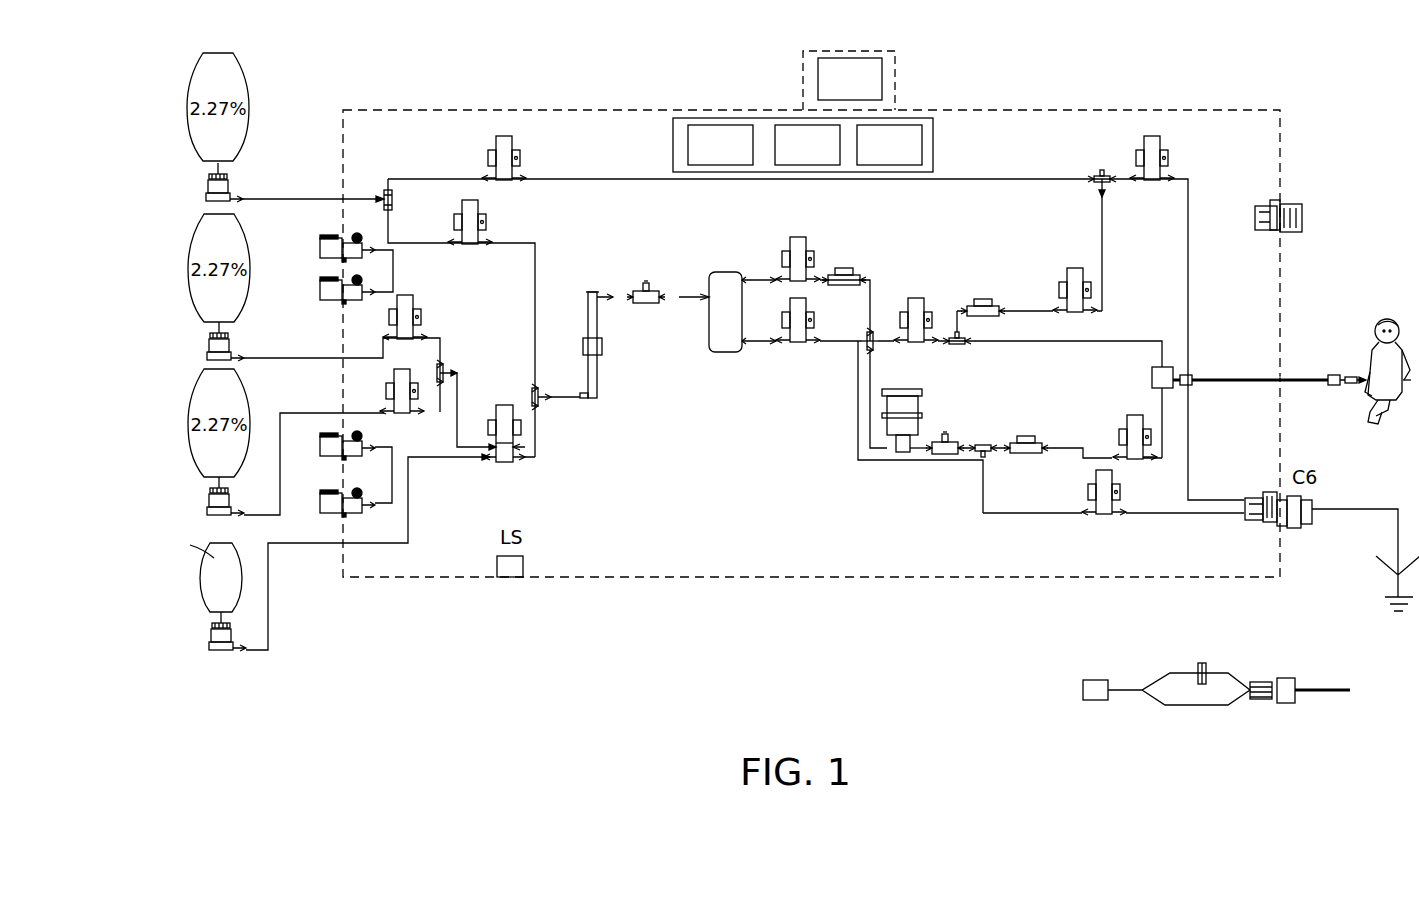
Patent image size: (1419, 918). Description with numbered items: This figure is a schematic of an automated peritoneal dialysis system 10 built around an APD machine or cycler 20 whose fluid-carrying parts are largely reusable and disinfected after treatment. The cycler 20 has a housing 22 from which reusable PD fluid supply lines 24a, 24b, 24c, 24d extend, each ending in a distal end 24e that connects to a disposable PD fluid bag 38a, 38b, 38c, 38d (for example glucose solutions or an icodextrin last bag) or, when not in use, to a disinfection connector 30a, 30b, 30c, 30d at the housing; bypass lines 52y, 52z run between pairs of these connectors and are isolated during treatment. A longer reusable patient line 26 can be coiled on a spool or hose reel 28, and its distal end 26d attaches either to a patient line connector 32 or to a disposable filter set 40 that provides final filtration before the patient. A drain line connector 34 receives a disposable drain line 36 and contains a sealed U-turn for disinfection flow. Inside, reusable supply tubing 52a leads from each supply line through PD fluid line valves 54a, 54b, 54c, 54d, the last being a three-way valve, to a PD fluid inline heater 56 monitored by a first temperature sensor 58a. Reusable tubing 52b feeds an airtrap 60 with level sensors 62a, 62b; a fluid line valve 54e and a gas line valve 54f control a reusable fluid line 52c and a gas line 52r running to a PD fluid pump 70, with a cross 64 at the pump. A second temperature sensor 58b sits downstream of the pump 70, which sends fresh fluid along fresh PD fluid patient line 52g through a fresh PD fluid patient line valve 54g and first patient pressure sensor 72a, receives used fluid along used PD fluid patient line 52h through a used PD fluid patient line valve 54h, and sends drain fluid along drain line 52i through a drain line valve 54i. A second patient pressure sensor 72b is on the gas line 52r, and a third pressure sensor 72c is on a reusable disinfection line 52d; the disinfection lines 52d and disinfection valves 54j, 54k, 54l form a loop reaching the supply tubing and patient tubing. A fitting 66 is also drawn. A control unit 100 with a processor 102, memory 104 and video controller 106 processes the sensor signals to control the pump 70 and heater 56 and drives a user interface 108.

The automated peritoneal dialysis system 10 is at (638, 92).
The APD machine or cycler 20 is at (1282, 110).
The housing 22 is at (1050, 108).
The reusable PD fluid supply line 24a is at (300, 198).
The reusable PD fluid supply line 24b is at (302, 357).
The reusable PD fluid supply line 24c is at (326, 412).
The reusable PD fluid supply line 24d is at (300, 545).
The distal end 24e is at (207, 197).
The reusable patient line 26 is at (1310, 378).
The distal end 26d is at (1334, 375).
The spool or hose reel 28 is at (1152, 377).
The disinfection connector 30a is at (318, 250).
The disinfection connector 30b is at (318, 292).
The disinfection connector 30c is at (316, 458).
The disinfection connector 30d is at (330, 520).
The patient line connector 32 is at (1302, 212).
The drain line connector 34 is at (1254, 496).
The disposable drain line 36 is at (1392, 508).
The PD fluid container or bag 38a is at (189, 133).
The PD fluid container or bag 38b is at (190, 289).
The PD fluid container or bag 38c is at (191, 450).
The PD fluid container or bag 38d is at (204, 598).
The disposable filter set 40 is at (1170, 706).
The reusable supply tubing 52a is at (430, 242).
The reusable tubing 52b is at (616, 296).
The reusable fluid line 52c is at (850, 344).
The reusable disinfection tube or line 52d is at (996, 178).
The fresh PD fluid patient tubing or line 52g is at (1062, 447).
The used PD fluid patient tubing or line 52h is at (976, 346).
The reusable drain tubing or line 52i is at (1010, 516).
The gas line 52r is at (872, 282).
The bypass line 52y is at (394, 282).
The bypass line 52z is at (394, 495).
The PD fluid line valve 54a is at (478, 212).
The PD fluid line valve 54b is at (414, 318).
The PD fluid line valve 54c is at (410, 415).
The PD fluid line valve 54d is at (504, 404).
The fluid line valve 54e is at (798, 346).
The gas line valve 54f is at (798, 238).
The fresh PD fluid patient line valve 54g is at (1140, 462).
The used PD fluid patient line valve 54h is at (918, 298).
The drain line valve 54i is at (1102, 520).
The disinfection valve 54j is at (1144, 146).
The disinfection valve 54k is at (1084, 301).
The disinfection valve 54l is at (496, 147).
The PD fluid inline heater 56 is at (603, 348).
The first temperature sensor 58a is at (648, 282).
The second temperature sensor 58b is at (940, 456).
The airtrap 60 is at (726, 272).
The level sensor 62a is at (712, 281).
The level sensor 62b is at (712, 348).
The cross 64 is at (874, 334).
The tee connector 66 is at (988, 458).
The PD fluid pump 70 is at (898, 388).
The first patient pressure sensor 72a is at (1026, 438).
The second patient pressure sensor 72b is at (840, 272).
The third pressure sensor 72c is at (980, 298).
The control unit 100 is at (672, 162).
The processor 102 is at (736, 157).
The memory 104 is at (823, 157).
The video controller 106 is at (905, 157).
The user interface 108 is at (866, 90).